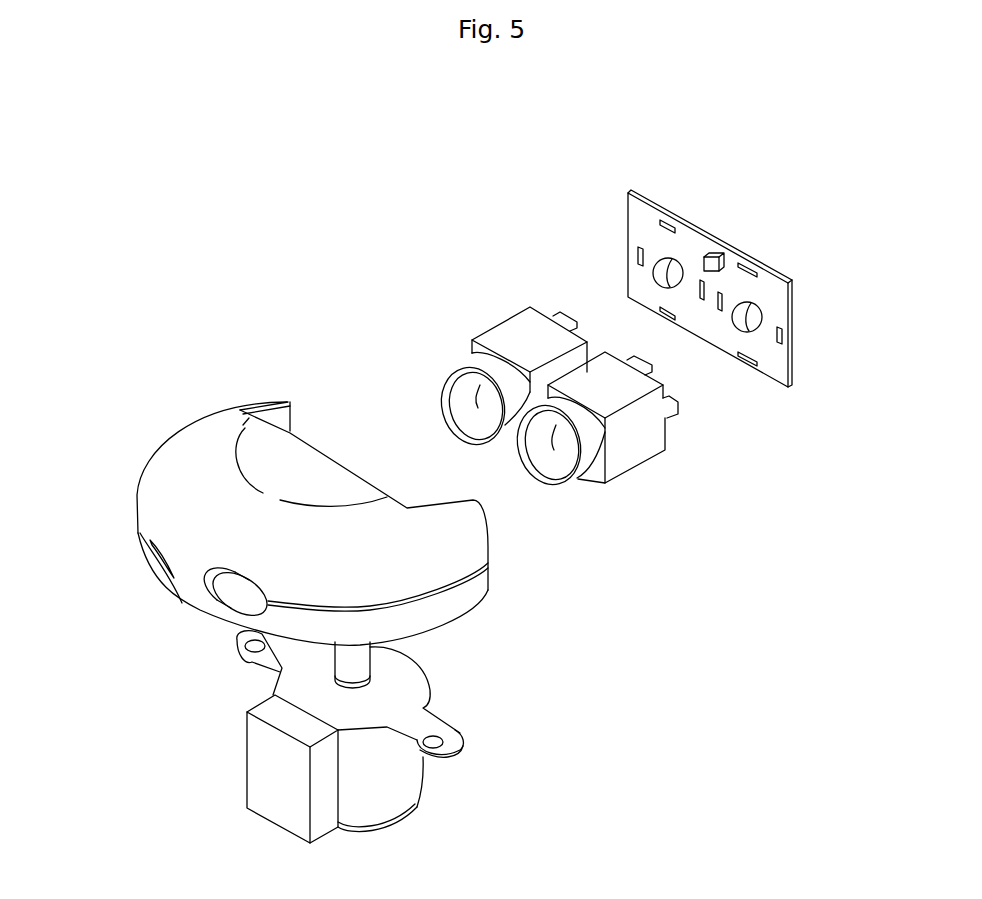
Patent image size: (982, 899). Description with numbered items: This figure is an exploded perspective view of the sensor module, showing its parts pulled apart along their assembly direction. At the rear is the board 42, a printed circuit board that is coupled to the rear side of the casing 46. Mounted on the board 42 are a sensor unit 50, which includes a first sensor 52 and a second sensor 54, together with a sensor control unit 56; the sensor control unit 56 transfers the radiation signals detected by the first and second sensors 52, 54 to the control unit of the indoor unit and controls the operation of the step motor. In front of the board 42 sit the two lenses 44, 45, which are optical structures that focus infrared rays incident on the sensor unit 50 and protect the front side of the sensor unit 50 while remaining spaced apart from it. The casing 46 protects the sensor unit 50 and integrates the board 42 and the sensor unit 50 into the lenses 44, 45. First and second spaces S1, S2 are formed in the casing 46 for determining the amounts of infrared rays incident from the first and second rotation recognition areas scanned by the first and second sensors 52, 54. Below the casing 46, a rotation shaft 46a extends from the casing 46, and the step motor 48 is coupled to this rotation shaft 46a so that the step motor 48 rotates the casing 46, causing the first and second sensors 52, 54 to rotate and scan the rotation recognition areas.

The board 42 is at (777, 360).
The sensor unit 50 is at (720, 219).
The first sensor 52 is at (743, 313).
The second sensor 54 is at (668, 270).
The sensor control unit 56 is at (715, 256).
The lens 44 is at (478, 408).
The lens 45 is at (557, 453).
The casing 46 is at (265, 530).
The first space S1 is at (143, 557).
The second space S2 is at (222, 601).
The rotation shaft 46a is at (353, 688).
The step motor 48 is at (392, 790).